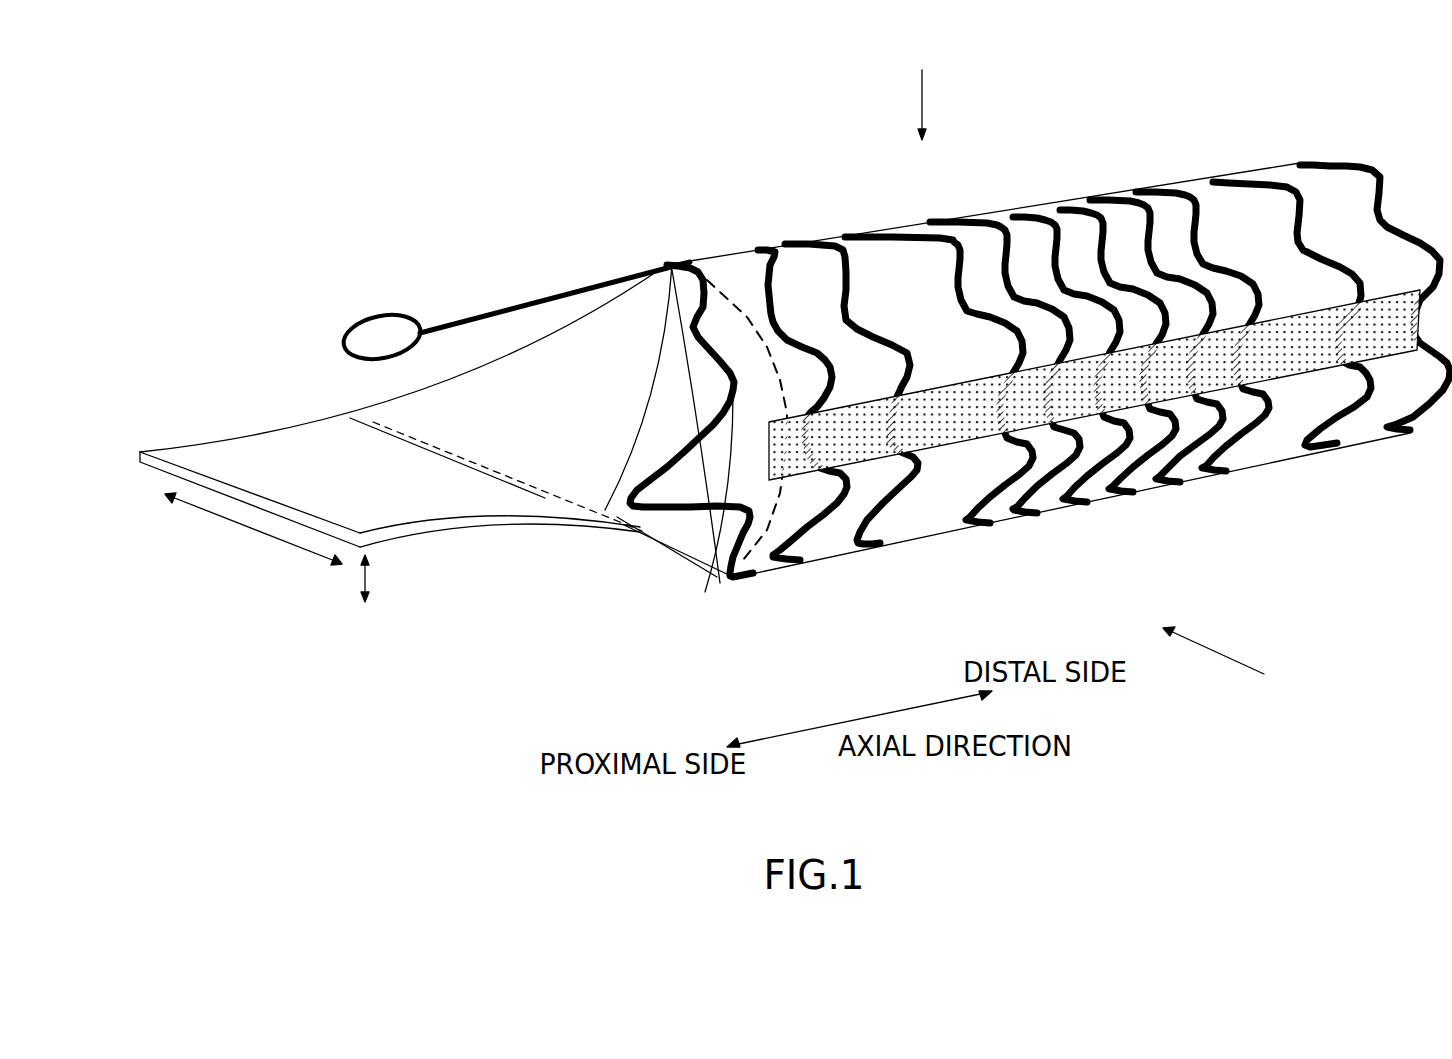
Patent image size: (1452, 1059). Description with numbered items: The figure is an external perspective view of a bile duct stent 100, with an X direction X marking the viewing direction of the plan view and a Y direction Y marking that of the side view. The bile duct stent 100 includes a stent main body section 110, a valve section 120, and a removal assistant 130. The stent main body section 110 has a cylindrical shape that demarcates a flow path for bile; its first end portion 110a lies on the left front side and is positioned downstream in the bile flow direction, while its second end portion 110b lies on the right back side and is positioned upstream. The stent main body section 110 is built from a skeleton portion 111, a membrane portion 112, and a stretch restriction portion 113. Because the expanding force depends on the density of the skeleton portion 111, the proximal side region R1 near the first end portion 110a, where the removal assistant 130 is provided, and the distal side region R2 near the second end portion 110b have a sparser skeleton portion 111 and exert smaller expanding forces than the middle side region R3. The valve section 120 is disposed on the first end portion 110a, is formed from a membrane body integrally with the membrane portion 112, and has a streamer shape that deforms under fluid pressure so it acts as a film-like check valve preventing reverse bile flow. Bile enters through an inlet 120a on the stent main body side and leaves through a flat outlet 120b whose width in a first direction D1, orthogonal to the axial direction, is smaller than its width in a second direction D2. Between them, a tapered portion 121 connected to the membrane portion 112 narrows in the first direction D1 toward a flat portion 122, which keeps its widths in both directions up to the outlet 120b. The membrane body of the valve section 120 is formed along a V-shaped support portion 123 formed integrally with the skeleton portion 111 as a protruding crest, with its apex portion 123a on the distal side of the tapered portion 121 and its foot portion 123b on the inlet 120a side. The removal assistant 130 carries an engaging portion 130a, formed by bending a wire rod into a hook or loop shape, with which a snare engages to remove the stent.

The bile duct stent 100 is at (1115, 146).
The stent main body section 110 is at (795, 606).
The first end portion 110a is at (703, 253).
The second end portion 110b is at (1328, 150).
The skeleton portion 111 is at (1240, 437).
The membrane portion 112 is at (923, 503).
The stretch restriction portion 113 is at (1290, 357).
The valve section 120 is at (433, 680).
The inlet 120a is at (630, 263).
The outlet 120b is at (138, 455).
The tapered portion 121 is at (493, 385).
The flat portion 122 is at (473, 510).
The support portion 123 is at (680, 508).
The apex portion 123a is at (618, 522).
The foot portion 123b is at (720, 565).
The removal assistant 130 is at (512, 305).
The engaging portion 130a is at (390, 317).
The proximal side region R1 is at (783, 270).
The distal side region R2 is at (1288, 180).
The middle side region R3 is at (1020, 212).
The first direction D1 is at (385, 578).
The second direction D2 is at (253, 529).
The X direction X is at (923, 86).
The Y direction Y is at (1225, 663).